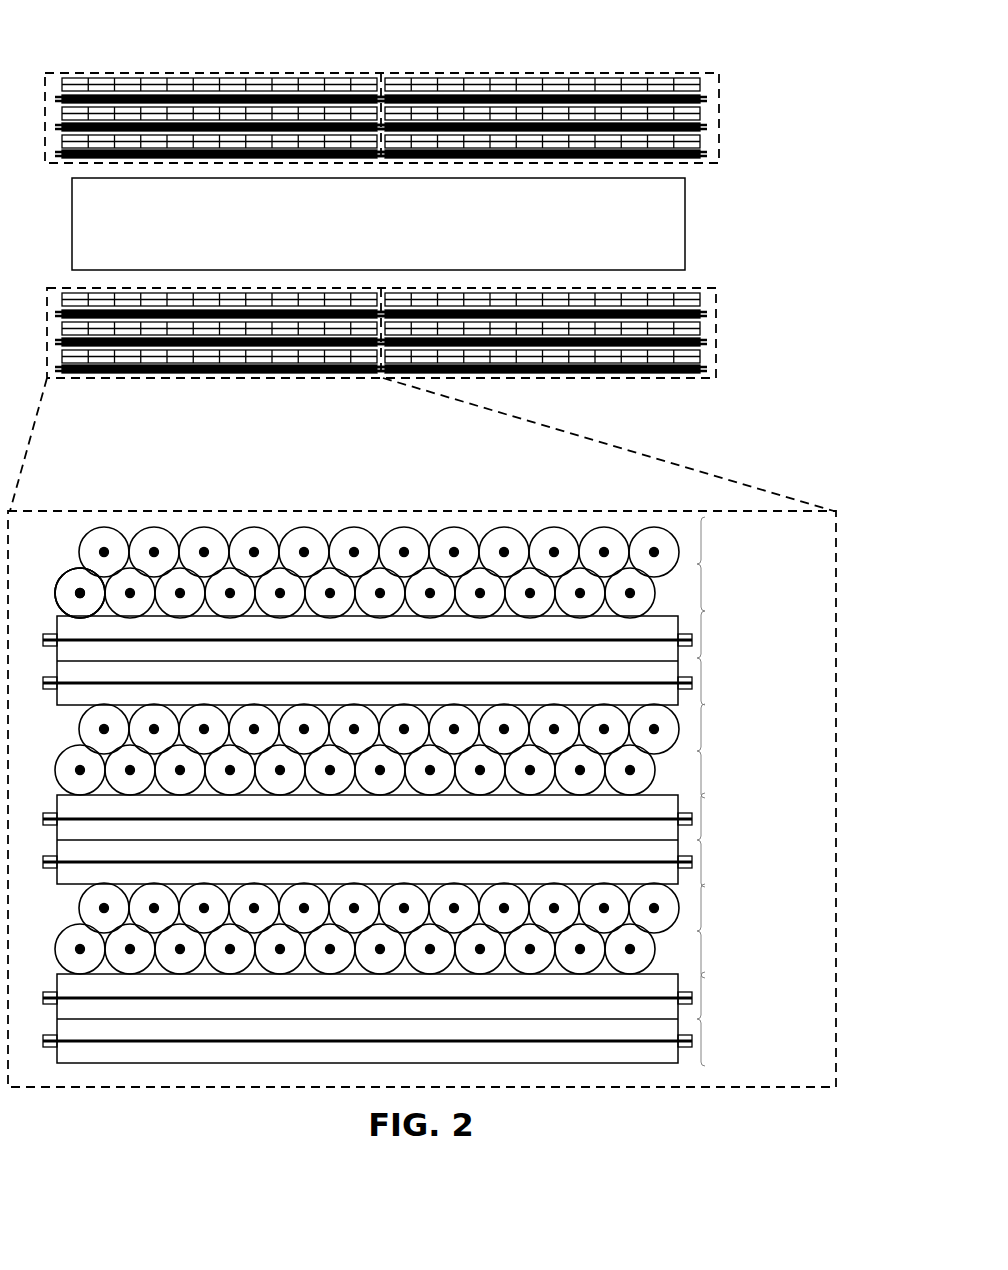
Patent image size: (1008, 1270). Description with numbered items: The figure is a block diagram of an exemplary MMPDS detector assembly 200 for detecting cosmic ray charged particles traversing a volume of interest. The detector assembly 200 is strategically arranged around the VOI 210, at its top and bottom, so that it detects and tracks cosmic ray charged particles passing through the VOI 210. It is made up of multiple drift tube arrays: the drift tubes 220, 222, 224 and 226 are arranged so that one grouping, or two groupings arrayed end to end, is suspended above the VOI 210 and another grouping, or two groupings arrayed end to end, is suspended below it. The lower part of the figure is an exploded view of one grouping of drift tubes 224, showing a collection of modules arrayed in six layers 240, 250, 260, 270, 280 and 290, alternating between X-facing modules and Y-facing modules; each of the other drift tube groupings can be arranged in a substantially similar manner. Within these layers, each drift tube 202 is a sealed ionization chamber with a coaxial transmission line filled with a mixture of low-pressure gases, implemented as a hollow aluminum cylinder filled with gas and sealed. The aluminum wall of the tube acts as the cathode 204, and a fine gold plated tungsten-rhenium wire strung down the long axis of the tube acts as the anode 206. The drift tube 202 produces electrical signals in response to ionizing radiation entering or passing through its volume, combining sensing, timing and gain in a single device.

The detector assembly 200 is at (736, 75).
The drift tube grouping 220 is at (68, 72).
The drift tube grouping 222 is at (412, 72).
The drift tube grouping 224 is at (65, 287).
The drift tube grouping 226 is at (697, 287).
The volume of interest (VOI) 210 is at (364, 246).
The drift tube 202 is at (80, 576).
The cathode 204 is at (59, 581).
The anode 206 is at (76, 593).
The layer 240 is at (440, 567).
The layer 250 is at (433, 658).
The layer 260 is at (440, 751).
The layer 270 is at (433, 840).
The layer 280 is at (440, 930).
The layer 290 is at (433, 1019).